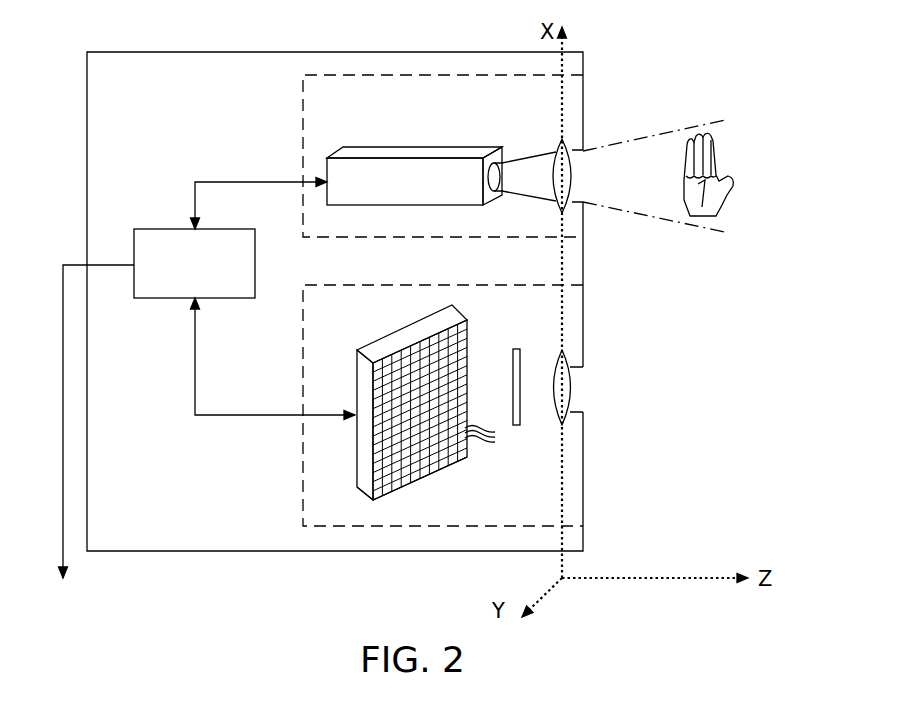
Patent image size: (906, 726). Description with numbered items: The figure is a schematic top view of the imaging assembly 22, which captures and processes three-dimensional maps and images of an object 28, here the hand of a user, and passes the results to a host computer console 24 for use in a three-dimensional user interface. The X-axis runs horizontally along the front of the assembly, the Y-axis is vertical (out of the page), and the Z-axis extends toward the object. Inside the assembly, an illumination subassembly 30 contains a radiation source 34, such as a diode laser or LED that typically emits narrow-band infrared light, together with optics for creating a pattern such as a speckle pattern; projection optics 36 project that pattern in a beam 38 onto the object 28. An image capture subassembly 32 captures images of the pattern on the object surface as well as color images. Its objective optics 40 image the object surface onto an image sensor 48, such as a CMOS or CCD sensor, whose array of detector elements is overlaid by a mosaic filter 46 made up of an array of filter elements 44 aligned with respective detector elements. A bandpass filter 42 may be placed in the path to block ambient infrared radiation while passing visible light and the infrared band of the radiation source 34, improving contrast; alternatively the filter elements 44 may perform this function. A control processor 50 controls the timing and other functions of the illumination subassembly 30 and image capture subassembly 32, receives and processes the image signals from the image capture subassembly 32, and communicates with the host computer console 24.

The imaging assembly 22 is at (393, 52).
The host computer console 24 is at (126, 441).
The object 28 is at (713, 152).
The illumination subassembly 30 is at (433, 76).
The image capture subassembly 32 is at (383, 527).
The radiation source 34 is at (380, 147).
The projection optics 36 is at (556, 150).
The beam 38 is at (683, 127).
The objective optics 40 is at (557, 350).
The bandpass filter 42 is at (510, 348).
The filter elements 44 is at (493, 441).
The mosaic filter 46 is at (357, 497).
The image sensor 48 is at (375, 338).
The control processor 50 is at (155, 228).